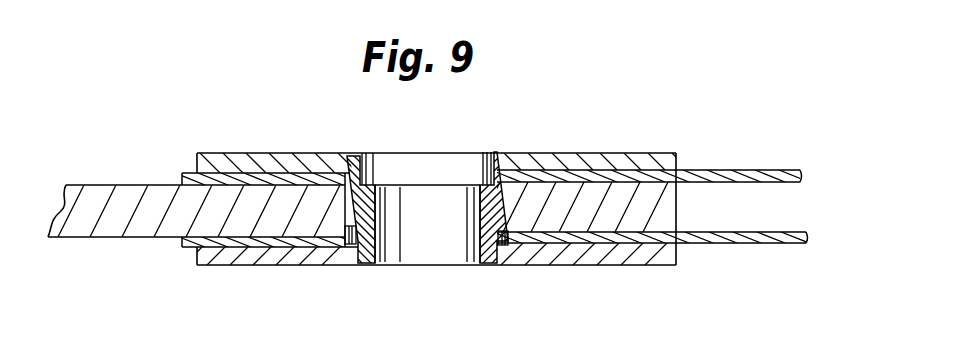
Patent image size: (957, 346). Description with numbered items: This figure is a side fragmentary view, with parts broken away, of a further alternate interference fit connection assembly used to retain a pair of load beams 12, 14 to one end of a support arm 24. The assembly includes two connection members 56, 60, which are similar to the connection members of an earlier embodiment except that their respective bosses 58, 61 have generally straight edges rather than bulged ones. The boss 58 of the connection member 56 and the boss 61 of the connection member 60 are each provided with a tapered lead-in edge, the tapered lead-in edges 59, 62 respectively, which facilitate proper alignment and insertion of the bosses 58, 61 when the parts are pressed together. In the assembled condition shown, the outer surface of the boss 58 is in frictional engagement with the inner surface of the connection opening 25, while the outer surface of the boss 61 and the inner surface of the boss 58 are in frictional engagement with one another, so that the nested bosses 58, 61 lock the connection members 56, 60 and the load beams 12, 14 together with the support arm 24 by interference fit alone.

The load beam 12 is at (737, 165).
The load beam 14 is at (705, 243).
The support arm 24 is at (143, 227).
The connection opening 25 is at (345, 236).
The connection member 56 is at (217, 153).
The boss 58 is at (387, 165).
The tapered lead-in edge 59 is at (358, 262).
The connection member 60 is at (229, 264).
The boss 61 is at (500, 222).
The tapered lead-in edge 62 is at (483, 170).